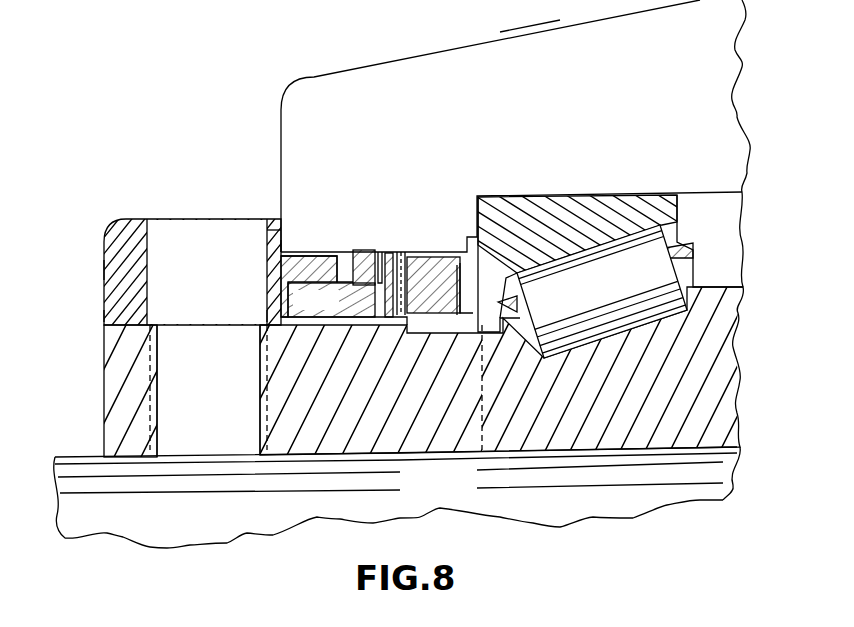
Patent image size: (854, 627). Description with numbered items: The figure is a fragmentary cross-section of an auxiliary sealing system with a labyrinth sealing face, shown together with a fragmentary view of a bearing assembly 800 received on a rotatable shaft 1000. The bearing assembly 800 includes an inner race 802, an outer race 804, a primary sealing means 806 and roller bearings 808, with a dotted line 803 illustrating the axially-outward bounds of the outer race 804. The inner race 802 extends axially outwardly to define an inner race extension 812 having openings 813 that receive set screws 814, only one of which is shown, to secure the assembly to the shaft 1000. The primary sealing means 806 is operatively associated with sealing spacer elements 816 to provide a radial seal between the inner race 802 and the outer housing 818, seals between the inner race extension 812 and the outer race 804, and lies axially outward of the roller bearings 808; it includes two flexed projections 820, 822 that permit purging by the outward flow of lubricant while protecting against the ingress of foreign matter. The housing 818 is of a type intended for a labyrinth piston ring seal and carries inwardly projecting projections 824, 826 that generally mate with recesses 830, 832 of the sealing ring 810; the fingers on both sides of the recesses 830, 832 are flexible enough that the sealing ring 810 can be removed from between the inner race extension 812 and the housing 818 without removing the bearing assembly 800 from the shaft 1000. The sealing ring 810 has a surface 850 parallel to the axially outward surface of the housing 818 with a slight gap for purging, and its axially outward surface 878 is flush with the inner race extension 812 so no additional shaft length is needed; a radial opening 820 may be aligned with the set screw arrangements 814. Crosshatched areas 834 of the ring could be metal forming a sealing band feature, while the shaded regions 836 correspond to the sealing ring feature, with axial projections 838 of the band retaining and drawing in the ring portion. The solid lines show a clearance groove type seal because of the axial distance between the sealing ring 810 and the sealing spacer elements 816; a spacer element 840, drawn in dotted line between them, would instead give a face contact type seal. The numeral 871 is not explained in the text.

The bearing assembly 800 is at (275, 73).
The inner race 802 is at (639, 415).
The dotted line 803 is at (483, 380).
The outer race 804 is at (562, 239).
The primary sealing means 806 is at (478, 232).
The roller bearings 808 is at (693, 255).
The sealing ring 810 is at (100, 215).
The inner race extension 812 is at (146, 415).
The openings 813 is at (158, 330).
The set screws 814 is at (226, 415).
The sealing spacer elements 816 is at (481, 266).
The outer housing 818 is at (510, 30).
The flexed projection 820 is at (267, 231).
The flexed projection 822 is at (470, 313).
The projection 824 is at (352, 262).
The projection 826 is at (398, 250).
The recess 830 is at (360, 290).
The recess 832 is at (382, 318).
The crosshatched areas 834 is at (105, 315).
The shaded regions 836 is at (272, 328).
The projections 838 is at (282, 273).
The spacer element 840 is at (398, 328).
The surface 850 is at (283, 250).
The seal case flange 871 is at (300, 265).
The axially outward surface 878 is at (104, 268).
The shaft 1000 is at (470, 491).